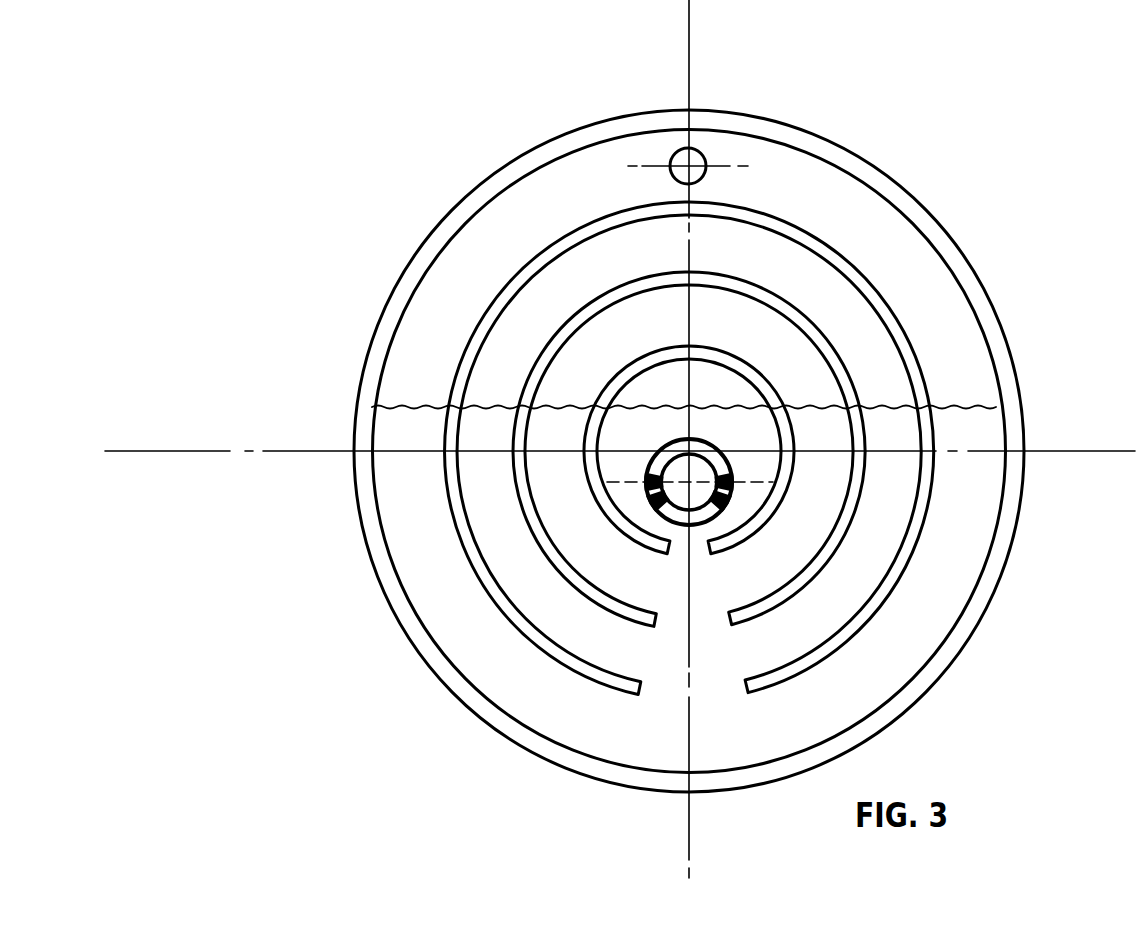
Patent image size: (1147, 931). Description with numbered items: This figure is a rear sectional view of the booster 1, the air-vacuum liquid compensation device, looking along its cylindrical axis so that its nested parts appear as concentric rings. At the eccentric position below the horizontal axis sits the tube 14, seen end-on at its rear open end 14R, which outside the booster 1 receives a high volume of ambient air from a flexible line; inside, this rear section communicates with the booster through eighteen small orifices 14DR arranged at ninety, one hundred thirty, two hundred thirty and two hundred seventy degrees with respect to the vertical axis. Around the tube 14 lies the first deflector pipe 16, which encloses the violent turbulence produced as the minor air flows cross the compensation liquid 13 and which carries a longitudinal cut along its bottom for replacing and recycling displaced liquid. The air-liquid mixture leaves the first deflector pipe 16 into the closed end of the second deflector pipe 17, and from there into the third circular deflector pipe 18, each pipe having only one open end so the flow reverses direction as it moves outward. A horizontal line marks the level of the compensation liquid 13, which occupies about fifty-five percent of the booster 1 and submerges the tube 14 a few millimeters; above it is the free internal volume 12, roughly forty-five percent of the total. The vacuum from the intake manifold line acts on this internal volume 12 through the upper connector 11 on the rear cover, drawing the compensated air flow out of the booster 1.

The air-vacuum liquid compensation device 1 is at (1012, 486).
The connector 11 is at (695, 160).
The internal volume 12 is at (800, 383).
The compensation liquid 13 is at (402, 434).
The tube 14 is at (684, 518).
The rear open end of tube 14R is at (681, 500).
The rear tube section orifices 14DR is at (665, 498).
The first deflector pipe 16 is at (778, 486).
The second deflector pipe 17 is at (843, 520).
The third circular deflector pipe 18 is at (892, 578).